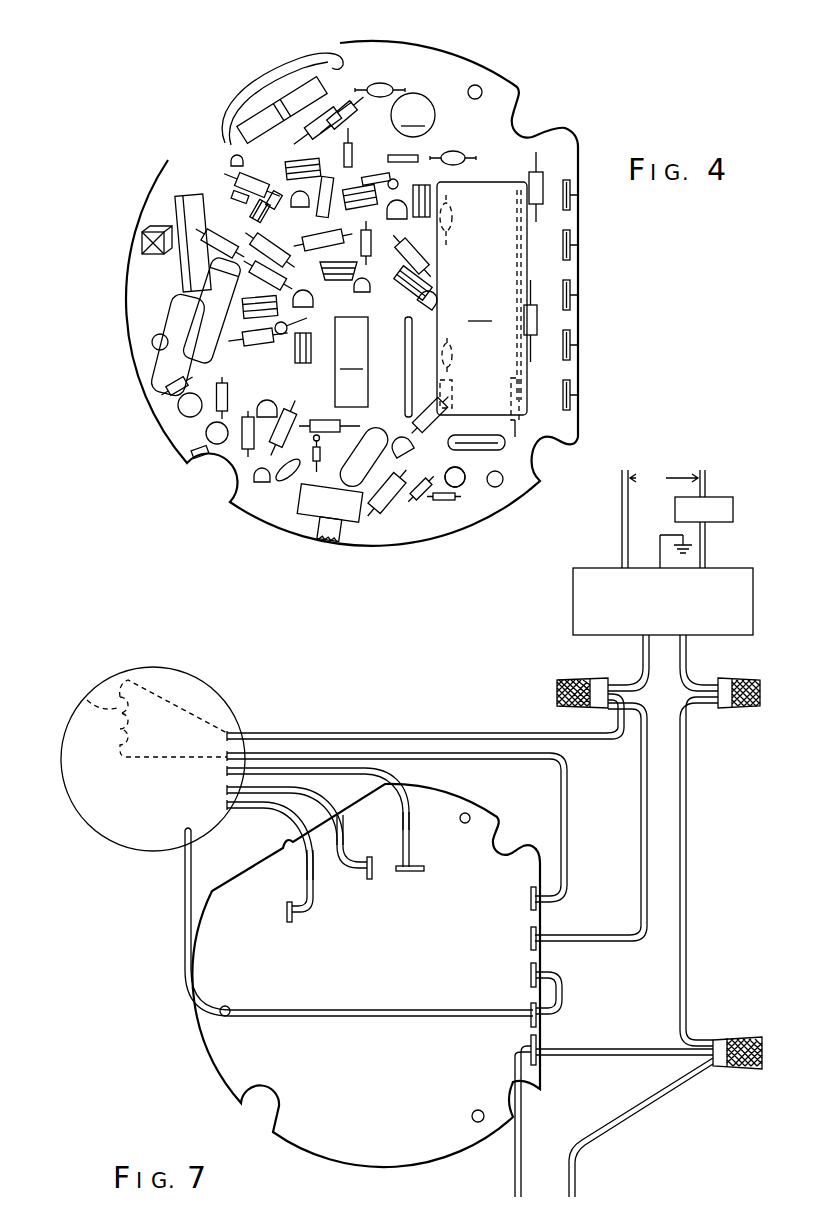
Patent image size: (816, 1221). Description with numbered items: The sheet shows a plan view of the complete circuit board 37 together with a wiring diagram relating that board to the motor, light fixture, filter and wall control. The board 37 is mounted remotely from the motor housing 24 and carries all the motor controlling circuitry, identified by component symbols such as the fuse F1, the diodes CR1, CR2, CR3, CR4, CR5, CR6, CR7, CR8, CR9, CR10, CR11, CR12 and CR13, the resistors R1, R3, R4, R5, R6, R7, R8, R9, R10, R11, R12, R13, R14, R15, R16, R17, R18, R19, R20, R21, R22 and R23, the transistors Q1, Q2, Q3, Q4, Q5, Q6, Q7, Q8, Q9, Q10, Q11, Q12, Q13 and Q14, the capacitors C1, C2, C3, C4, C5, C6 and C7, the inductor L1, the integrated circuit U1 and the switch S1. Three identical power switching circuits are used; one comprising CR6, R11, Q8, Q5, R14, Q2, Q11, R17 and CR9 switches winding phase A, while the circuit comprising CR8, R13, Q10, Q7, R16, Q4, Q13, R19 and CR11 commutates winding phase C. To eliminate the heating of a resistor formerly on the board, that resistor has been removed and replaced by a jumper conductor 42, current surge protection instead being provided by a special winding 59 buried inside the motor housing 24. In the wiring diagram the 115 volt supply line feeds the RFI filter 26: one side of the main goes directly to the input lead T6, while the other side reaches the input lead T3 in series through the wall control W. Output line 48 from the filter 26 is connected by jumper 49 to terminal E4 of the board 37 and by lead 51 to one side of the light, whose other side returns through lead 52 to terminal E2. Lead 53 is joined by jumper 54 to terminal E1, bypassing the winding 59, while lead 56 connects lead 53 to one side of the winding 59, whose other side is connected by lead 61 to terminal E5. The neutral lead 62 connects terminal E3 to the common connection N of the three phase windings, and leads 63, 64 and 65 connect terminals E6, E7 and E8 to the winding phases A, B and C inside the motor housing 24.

In FIG. 4, the circuit board 37 is at (500, 72).
In FIG. 7, the circuit board 37 is at (227, 1082).
In FIG. 4, the jumper conductor 42 is at (255, 85).
In FIG. 4, the fuse F1 is at (292, 88).
In FIG. 4, the diode CR1 is at (167, 383).
In FIG. 4, the diode CR2 is at (424, 496).
In FIG. 4, the diode CR3 is at (447, 502).
In FIG. 4, the diode CR4 is at (545, 330).
In FIG. 4, the diode CR5 is at (540, 180).
In FIG. 4, the diode CR6 is at (360, 100).
In FIG. 4, the diode CR7 is at (268, 195).
In FIG. 4, the diode CR8 is at (147, 225).
In FIG. 4, the diode CR9 is at (462, 156).
In FIG. 4, the diode CR10 is at (452, 232).
In FIG. 4, the diode CR11 is at (452, 355).
In FIG. 4, the diode CR12 is at (383, 83).
In FIG. 4, the diode CR13 is at (297, 92).
In FIG. 4, the resistor R1 is at (405, 388).
In FIG. 4, the resistor R3 is at (213, 293).
In FIG. 4, the resistor R4 is at (302, 432).
In FIG. 4, the resistor R5 is at (313, 465).
In FIG. 4, the resistor R6 is at (228, 397).
In FIG. 4, the resistor R7 is at (243, 437).
In FIG. 4, the resistor R8 is at (453, 392).
In FIG. 4, the resistor R9 is at (190, 448).
In FIG. 4, the resistor R10 is at (280, 460).
In FIG. 4, the resistor R11 is at (395, 182).
In FIG. 4, the resistor R12 is at (230, 173).
In FIG. 4, the resistor R13 is at (253, 320).
In FIG. 4, the resistor R14 is at (425, 265).
In FIG. 4, the resistor R15 is at (287, 157).
In FIG. 4, the resistor R16 is at (167, 193).
In FIG. 4, the resistor R17 is at (350, 278).
In FIG. 4, the resistor R18 is at (314, 272).
In FIG. 4, the resistor R19 is at (188, 372).
In FIG. 4, the resistor R20 is at (173, 265).
In FIG. 4, the resistor R21 is at (393, 512).
In FIG. 4, the resistor R22 is at (527, 420).
In FIG. 4, the resistor R23 is at (243, 303).
In FIG. 4, the transistor Q1 is at (256, 482).
In FIG. 4, the transistor Q2 is at (350, 185).
In FIG. 4, the transistor Q3 is at (250, 212).
In FIG. 4, the transistor Q4 is at (340, 345).
In FIG. 4, the transistor Q5 is at (432, 193).
In FIG. 4, the transistor Q6 is at (232, 160).
In FIG. 4, the transistor Q7 is at (293, 302).
In FIG. 4, the transistor Q8 is at (403, 220).
In FIG. 4, the transistor Q9 is at (293, 195).
In FIG. 4, the transistor Q10 is at (312, 338).
In FIG. 4, the transistor Q11 is at (434, 302).
In FIG. 4, the transistor Q12 is at (366, 292).
In FIG. 4, the transistor Q13 is at (275, 405).
In FIG. 4, the transistor Q14 is at (410, 449).
In FIG. 4, the capacitor C1 is at (482, 298).
In FIG. 4, the capacitor C2 is at (178, 405).
In FIG. 4, the capacitor C3 is at (465, 487).
In FIG. 4, the capacitor C4 is at (207, 440).
In FIG. 4, the capacitor C5 is at (362, 492).
In FIG. 4, the capacitor C6 is at (287, 486).
In FIG. 4, the capacitor C7 is at (508, 445).
In FIG. 4, the inductor L1 is at (413, 115).
In FIG. 4, the integrated circuit U1 is at (351, 362).
In FIG. 4, the switch S1 is at (322, 512).
In FIG. 4, the terminal E1 is at (578, 245).
In FIG. 7, the terminal E1 is at (533, 935).
In FIG. 4, the terminal E2 is at (578, 295).
In FIG. 7, the terminal E2 is at (533, 972).
In FIG. 4, the terminal E3 is at (578, 345).
In FIG. 7, the terminal E3 is at (530, 1018).
In FIG. 4, the terminal E4 is at (578, 395).
In FIG. 7, the terminal E4 is at (540, 1045).
In FIG. 4, the terminal E5 is at (578, 197).
In FIG. 7, the terminal E5 is at (533, 895).
In FIG. 4, the terminal E6 is at (420, 155).
In FIG. 7, the terminal E6 is at (413, 867).
In FIG. 4, the terminal E7 is at (348, 140).
In FIG. 7, the terminal E7 is at (375, 872).
In FIG. 4, the terminal E8 is at (232, 194).
In FIG. 7, the terminal E8 is at (298, 915).
In FIG. 7, the motor housing 24 is at (218, 695).
In FIG. 7, the special winding 59 is at (102, 700).
In FIG. 7, the RFI filter 26 is at (573, 595).
In FIG. 7, the input lead T3 is at (705, 548).
In FIG. 7, the input lead T6 is at (622, 537).
In FIG. 7, the wall control W is at (733, 508).
In FIG. 7, the 115 volt supply line 115 is at (664, 478).
In FIG. 7, the output line 48 is at (686, 655).
In FIG. 7, the lead 53 is at (643, 655).
In FIG. 7, the jumper 49 is at (632, 1049).
In FIG. 7, the lead 51 is at (622, 1125).
In FIG. 7, the lead 52 is at (515, 1175).
In FIG. 7, the jumper 54 is at (645, 805).
In FIG. 7, the lead 56 is at (432, 733).
In FIG. 7, the lead 61 is at (567, 775).
In FIG. 7, the neutral lead 62 is at (348, 1010).
In FIG. 7, the lead 63 is at (292, 815).
In FIG. 7, the lead 64 is at (343, 830).
In FIG. 7, the lead 65 is at (406, 800).
In FIG. 7, the winding phase A is at (227, 771).
In FIG. 7, the winding phase B is at (227, 786).
In FIG. 7, the winding phase C is at (227, 805).
In FIG. 7, the common connection N is at (183, 828).